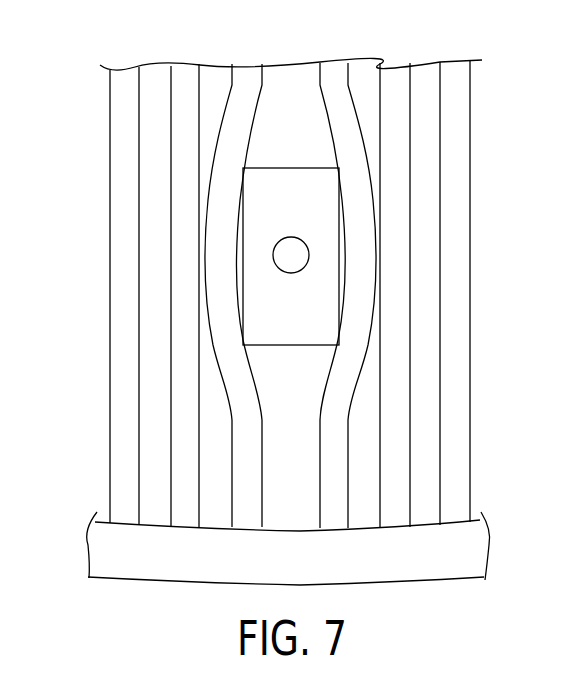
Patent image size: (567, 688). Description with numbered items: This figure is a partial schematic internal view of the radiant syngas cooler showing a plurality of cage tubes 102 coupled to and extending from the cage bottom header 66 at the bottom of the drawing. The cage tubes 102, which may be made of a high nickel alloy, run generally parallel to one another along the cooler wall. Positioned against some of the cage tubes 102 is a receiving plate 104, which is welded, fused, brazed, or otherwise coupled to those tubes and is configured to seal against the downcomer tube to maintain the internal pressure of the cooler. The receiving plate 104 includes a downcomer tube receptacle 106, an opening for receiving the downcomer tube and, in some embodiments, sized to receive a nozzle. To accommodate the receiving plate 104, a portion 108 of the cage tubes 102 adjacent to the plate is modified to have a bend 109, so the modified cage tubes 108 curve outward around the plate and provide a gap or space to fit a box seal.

The cage bottom header 66 is at (157, 582).
The cage tubes 102 is at (168, 468).
The receiving plate 104 is at (311, 322).
The downcomer tube receptacle 106 is at (273, 247).
The modified cage tubes 108 is at (227, 123).
The bend 109 is at (367, 182).